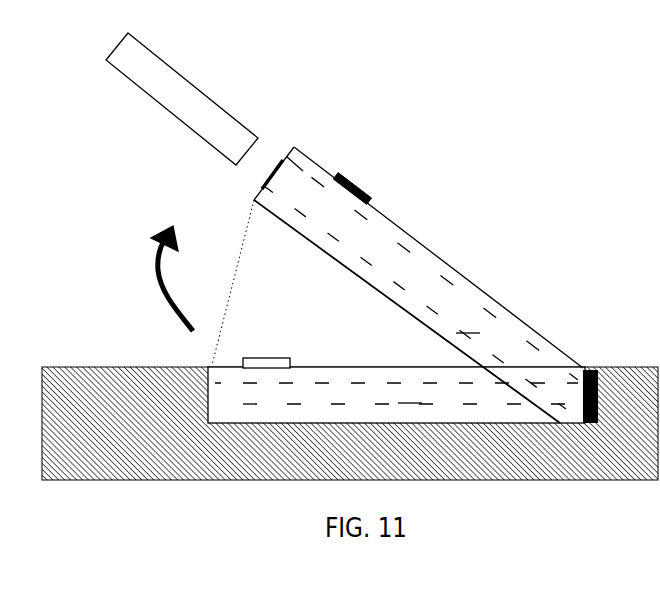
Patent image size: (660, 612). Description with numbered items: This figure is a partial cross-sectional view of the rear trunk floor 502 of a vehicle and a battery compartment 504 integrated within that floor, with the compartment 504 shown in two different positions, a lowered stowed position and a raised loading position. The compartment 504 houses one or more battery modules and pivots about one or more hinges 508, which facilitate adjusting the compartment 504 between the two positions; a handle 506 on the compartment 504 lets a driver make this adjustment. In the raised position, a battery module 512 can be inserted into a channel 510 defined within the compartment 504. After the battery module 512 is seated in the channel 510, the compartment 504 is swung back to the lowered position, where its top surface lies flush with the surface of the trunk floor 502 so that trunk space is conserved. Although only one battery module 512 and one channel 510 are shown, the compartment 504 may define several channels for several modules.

The floor 502 is at (78, 368).
The compartment 504 is at (373, 377).
The handle 506 is at (265, 357).
The hinge 508 is at (592, 368).
The channel 510 is at (228, 392).
The battery module 512 is at (190, 92).